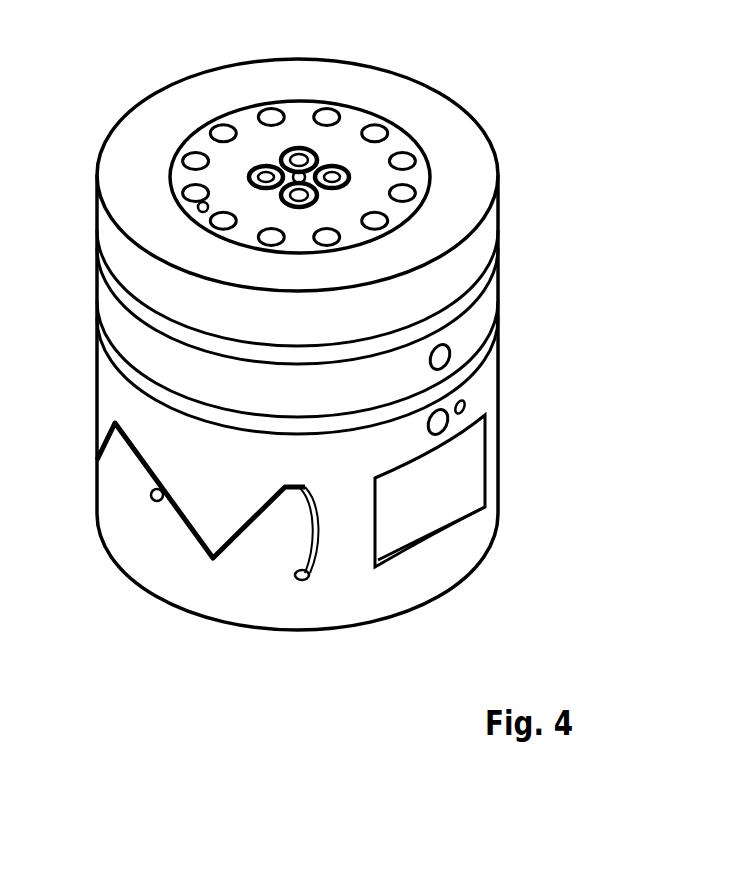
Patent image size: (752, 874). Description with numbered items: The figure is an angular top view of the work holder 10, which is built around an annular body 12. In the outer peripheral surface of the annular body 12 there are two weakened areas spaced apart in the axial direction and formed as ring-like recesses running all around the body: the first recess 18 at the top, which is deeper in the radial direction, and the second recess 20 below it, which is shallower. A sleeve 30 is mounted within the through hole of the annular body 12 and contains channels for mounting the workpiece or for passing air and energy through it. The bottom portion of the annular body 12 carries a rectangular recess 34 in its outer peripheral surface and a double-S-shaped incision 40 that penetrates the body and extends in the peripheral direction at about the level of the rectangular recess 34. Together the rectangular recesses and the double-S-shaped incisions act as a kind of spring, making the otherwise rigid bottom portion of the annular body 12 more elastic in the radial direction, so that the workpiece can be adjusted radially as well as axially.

The thermostat assembly 10 is at (82, 78).
The annular body 12 is at (472, 140).
The first recess 18 is at (465, 316).
The second recess 20 is at (460, 378).
The sleeve 30 is at (330, 138).
The rectangular recess 34 is at (458, 477).
The double-S-shaped incision 40 is at (183, 533).